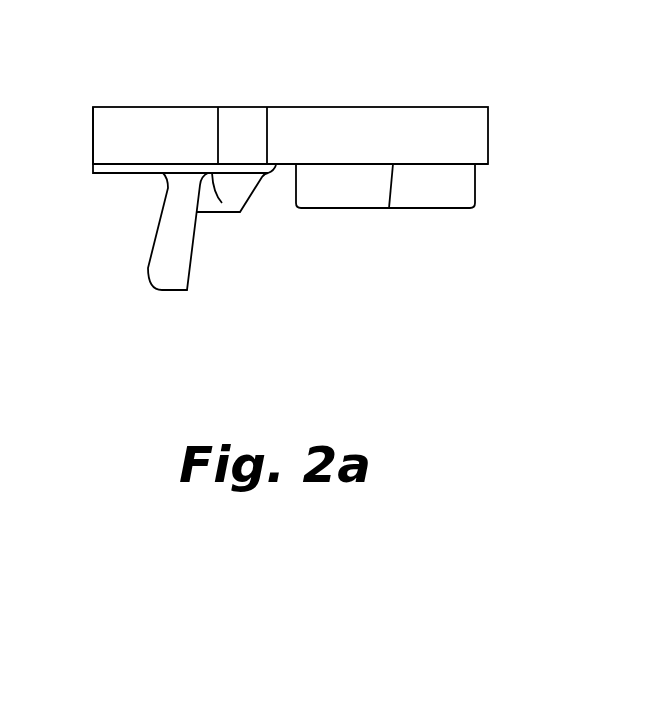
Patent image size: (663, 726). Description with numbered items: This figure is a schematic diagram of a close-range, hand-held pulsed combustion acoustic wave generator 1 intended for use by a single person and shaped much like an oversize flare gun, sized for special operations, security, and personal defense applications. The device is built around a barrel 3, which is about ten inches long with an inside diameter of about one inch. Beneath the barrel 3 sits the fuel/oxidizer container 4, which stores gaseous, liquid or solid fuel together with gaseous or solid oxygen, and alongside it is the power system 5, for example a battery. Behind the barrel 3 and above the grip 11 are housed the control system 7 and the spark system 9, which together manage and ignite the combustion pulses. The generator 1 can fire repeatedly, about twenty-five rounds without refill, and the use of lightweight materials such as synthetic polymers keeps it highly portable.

The pulsed combustion acoustic wave generator 1 is at (417, 60).
The barrel 3 is at (475, 120).
The fuel/oxidizer container 4 is at (445, 197).
The power system 5 is at (345, 193).
The control system 7 is at (152, 115).
The spark system 9 is at (243, 120).
The grip 11 is at (160, 268).